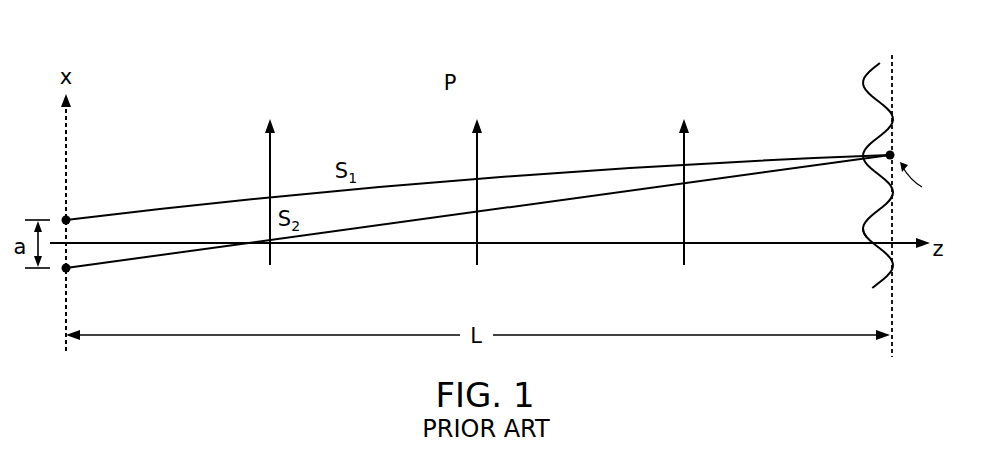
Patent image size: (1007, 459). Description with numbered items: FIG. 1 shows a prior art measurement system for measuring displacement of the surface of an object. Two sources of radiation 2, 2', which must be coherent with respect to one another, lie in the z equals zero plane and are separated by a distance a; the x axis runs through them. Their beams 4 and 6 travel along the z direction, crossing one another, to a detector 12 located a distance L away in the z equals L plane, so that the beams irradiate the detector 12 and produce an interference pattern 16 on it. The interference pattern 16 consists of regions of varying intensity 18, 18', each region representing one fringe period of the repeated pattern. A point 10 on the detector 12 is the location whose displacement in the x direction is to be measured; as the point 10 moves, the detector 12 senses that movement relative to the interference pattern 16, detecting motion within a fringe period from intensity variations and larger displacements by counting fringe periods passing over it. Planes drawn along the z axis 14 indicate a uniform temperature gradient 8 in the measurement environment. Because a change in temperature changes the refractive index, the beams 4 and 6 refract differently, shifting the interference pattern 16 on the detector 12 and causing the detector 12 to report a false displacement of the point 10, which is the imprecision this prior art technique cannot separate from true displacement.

The source of radiation 2 is at (51, 200).
The source of radiation 2' is at (50, 289).
The beam 4 is at (159, 207).
The beam 6 is at (159, 257).
The uniform temperature gradient 8 is at (268, 148).
The point 10 is at (896, 154).
The detector 12 is at (895, 310).
The optical axis (z axis) 14 is at (913, 236).
The interference pattern 16 is at (883, 104).
The region of varying intensity 18 is at (838, 233).
The region of varying intensity 18' is at (861, 196).